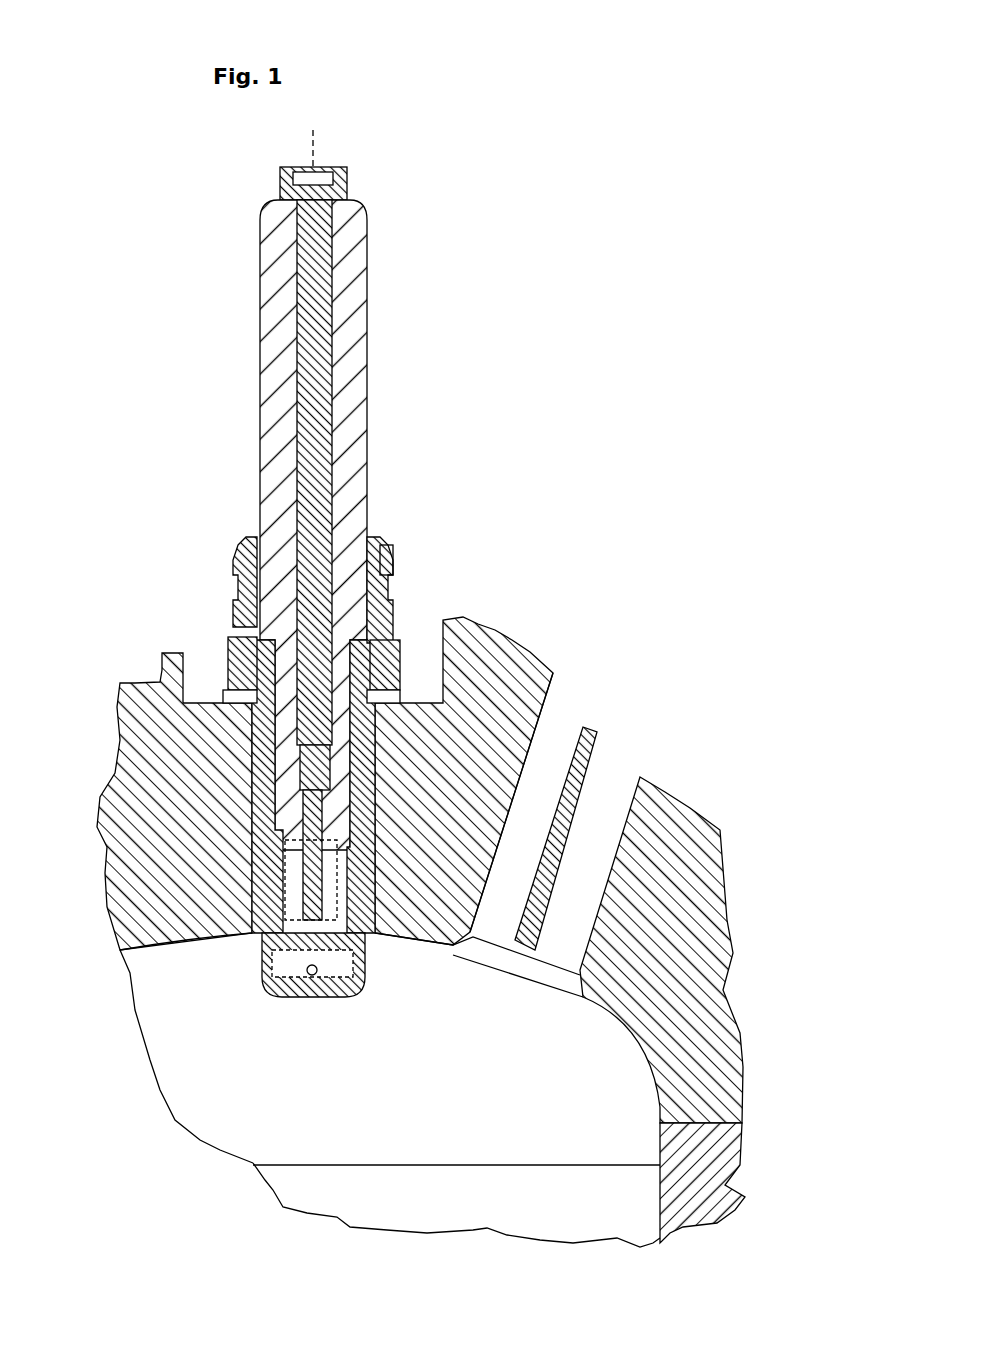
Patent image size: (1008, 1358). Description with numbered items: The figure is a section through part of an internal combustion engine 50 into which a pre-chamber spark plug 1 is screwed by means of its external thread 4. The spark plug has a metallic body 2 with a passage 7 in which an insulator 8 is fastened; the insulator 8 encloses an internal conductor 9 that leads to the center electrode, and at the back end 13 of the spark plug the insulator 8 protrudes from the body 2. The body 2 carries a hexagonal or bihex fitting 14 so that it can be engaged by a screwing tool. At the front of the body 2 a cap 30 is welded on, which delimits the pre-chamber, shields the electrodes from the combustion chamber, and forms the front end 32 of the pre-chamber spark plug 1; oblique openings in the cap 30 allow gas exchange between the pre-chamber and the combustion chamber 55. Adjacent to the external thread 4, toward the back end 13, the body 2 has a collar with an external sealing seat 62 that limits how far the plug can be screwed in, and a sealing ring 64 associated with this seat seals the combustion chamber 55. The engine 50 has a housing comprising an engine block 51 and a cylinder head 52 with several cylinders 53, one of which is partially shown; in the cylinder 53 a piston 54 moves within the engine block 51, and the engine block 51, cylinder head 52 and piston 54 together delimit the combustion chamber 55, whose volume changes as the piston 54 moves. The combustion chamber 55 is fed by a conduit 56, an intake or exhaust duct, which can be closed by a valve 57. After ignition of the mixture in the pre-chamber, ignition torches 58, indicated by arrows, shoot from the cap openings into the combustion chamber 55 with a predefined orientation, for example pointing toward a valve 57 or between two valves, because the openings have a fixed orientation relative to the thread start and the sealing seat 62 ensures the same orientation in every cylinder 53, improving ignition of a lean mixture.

The pre-chamber spark plug 1 is at (264, 601).
The internal combustion engine 50 is at (441, 732).
The internal conductor 9 is at (320, 358).
The insulator 8 is at (357, 412).
The back end 13 is at (320, 546).
The hexagonal or bihex fitting 14 is at (393, 570).
The passage 7 is at (238, 610).
The metallic body 2 is at (388, 643).
The sealing ring 64 is at (225, 687).
The external sealing seat 62 is at (413, 667).
The cylinder head 52 is at (503, 650).
The valve 57 is at (587, 743).
The conduit 56 is at (615, 775).
The external thread 4 is at (253, 807).
The ignition torches 58 is at (253, 978).
The cap 30 is at (293, 1000).
The front end 32 is at (325, 1003).
The combustion chamber 55 is at (212, 1100).
The cylinder 53 is at (215, 1167).
The piston 54 is at (287, 1182).
The engine block 51 is at (717, 1190).